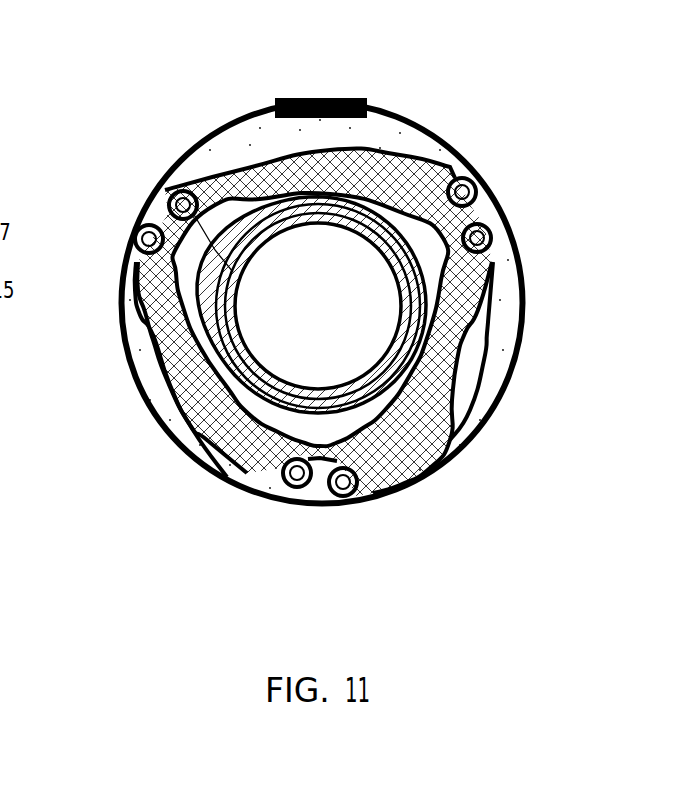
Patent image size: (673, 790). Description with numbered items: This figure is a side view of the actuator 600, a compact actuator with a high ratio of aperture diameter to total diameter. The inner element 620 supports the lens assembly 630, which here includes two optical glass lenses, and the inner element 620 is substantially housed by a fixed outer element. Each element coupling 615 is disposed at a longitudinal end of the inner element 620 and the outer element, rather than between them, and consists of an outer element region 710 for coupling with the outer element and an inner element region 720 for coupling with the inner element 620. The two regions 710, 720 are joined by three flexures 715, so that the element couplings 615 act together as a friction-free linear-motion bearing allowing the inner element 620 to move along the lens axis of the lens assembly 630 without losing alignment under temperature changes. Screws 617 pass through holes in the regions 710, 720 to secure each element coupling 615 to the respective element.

The actuator 600 is at (552, 158).
The element coupling 615 is at (430, 127).
The screw 617 is at (135, 236).
The inner element 620 is at (163, 187).
The lens assembly 630 is at (265, 305).
The outer element region 710 is at (232, 142).
The flexure 715 is at (313, 193).
The inner element region 720 is at (340, 400).